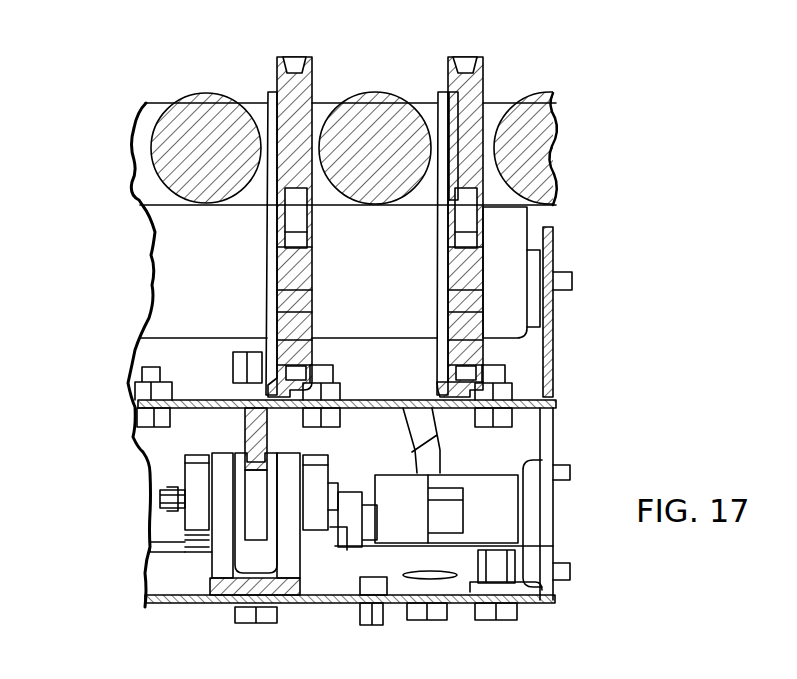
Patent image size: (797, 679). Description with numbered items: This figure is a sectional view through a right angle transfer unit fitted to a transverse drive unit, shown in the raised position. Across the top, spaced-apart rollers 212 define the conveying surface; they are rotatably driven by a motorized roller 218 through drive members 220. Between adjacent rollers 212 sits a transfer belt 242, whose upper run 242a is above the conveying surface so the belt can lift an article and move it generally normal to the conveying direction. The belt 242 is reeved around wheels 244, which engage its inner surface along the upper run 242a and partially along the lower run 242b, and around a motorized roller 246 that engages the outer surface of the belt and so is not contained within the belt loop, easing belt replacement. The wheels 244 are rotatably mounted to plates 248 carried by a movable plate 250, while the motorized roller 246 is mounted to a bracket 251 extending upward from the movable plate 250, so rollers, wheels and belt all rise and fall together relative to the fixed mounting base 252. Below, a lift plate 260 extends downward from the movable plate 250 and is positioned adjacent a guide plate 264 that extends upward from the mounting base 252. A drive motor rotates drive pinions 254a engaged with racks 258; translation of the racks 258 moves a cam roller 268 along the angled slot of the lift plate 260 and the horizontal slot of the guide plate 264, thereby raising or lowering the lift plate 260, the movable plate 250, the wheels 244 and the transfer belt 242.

The rollers 212 is at (198, 100).
The upper run of transfer belt 242a is at (288, 63).
The transfer belt 242 is at (467, 60).
The wheels 244 is at (475, 87).
The plates 248 is at (270, 258).
The motorized rollers 246 is at (505, 258).
The movable plate 250 is at (200, 397).
The bracket 251 is at (553, 318).
The lower run of transfer belt 242b is at (470, 368).
The motorized roller 218 is at (520, 437).
The drive members 220 is at (430, 450).
The lift plate 260 is at (255, 426).
The racks 258 is at (317, 477).
The cam roller 268 is at (165, 498).
The drive pinions 254a is at (190, 552).
The guide plate 264 is at (220, 563).
The mounting base 252 is at (312, 605).